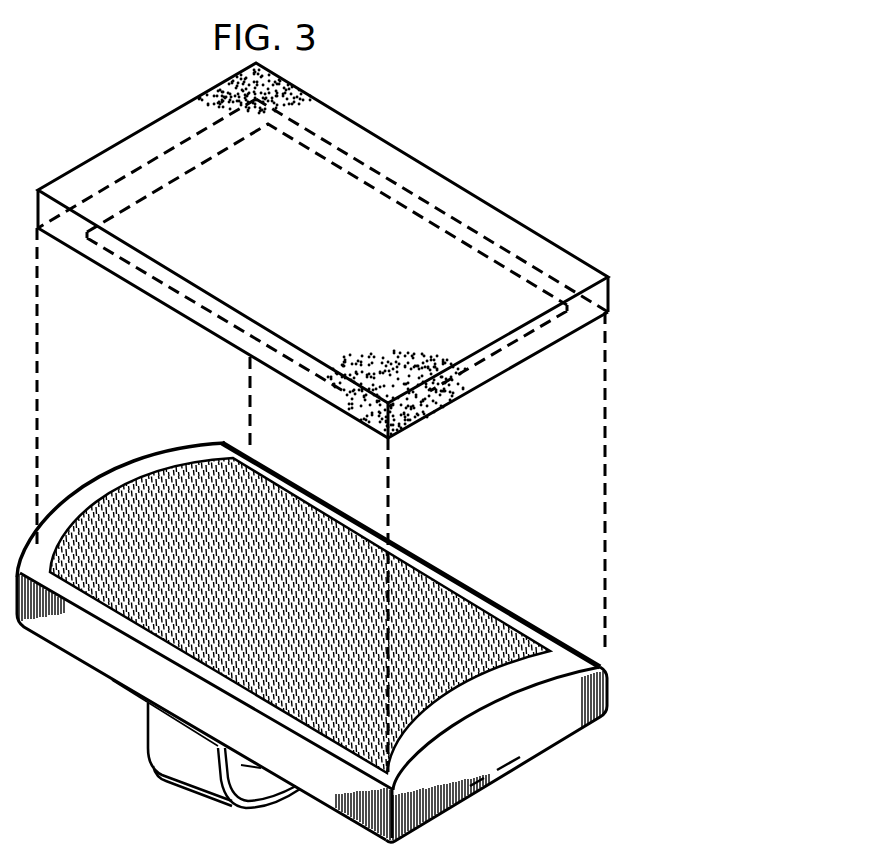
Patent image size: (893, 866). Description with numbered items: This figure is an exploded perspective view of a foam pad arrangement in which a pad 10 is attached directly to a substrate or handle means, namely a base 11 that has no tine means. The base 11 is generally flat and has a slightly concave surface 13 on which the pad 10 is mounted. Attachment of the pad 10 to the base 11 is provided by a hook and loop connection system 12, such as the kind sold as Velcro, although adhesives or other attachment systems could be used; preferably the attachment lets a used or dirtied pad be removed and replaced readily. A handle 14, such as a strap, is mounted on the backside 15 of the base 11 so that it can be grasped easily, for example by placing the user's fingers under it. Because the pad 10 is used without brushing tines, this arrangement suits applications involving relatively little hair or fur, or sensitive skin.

The pad 10 is at (538, 248).
The base 11 is at (558, 715).
The hook and loop connection system 12 is at (200, 308).
The slightly concave surface 13 is at (162, 470).
The handle 14 is at (168, 757).
The backside 15 is at (324, 810).